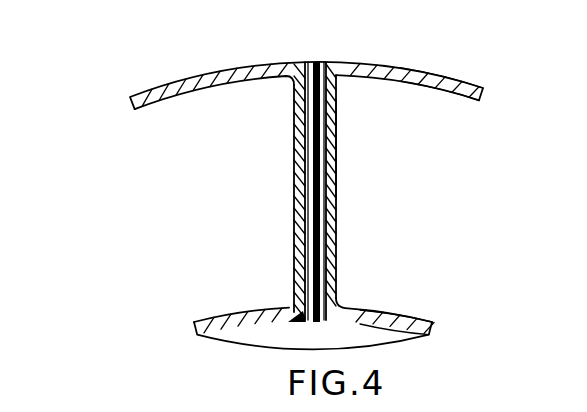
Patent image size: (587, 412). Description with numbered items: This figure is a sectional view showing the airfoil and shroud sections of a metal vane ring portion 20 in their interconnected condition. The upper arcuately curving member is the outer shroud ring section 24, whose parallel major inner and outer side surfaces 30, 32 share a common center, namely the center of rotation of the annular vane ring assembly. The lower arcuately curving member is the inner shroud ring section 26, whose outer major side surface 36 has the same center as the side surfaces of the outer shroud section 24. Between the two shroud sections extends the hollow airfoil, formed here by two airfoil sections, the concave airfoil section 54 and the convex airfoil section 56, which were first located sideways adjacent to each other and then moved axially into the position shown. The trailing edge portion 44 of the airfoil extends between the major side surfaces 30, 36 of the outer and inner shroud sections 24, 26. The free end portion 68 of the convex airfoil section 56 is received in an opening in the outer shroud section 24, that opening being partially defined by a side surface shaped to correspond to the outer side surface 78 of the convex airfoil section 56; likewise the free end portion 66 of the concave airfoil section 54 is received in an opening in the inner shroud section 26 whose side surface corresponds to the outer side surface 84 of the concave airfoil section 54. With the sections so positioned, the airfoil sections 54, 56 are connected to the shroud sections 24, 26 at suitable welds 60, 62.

The vane ring portion 20 is at (96, 96).
The outer shroud ring section 24 is at (489, 87).
The inner shroud ring section 26 is at (442, 324).
The inner side surface 30 is at (461, 100).
The outer side surface 32 is at (452, 80).
The outer major side surface 36 is at (423, 290).
The trailing edge portion 44 is at (405, 333).
The concave airfoil section 54 is at (290, 205).
The convex airfoil section 56 is at (345, 183).
The weld 60 is at (333, 62).
The weld 62 is at (297, 323).
The free end portion 66 is at (316, 325).
The free end portion 68 is at (317, 62).
The outer side surface 78 is at (336, 128).
The outer side surface 84 is at (294, 259).